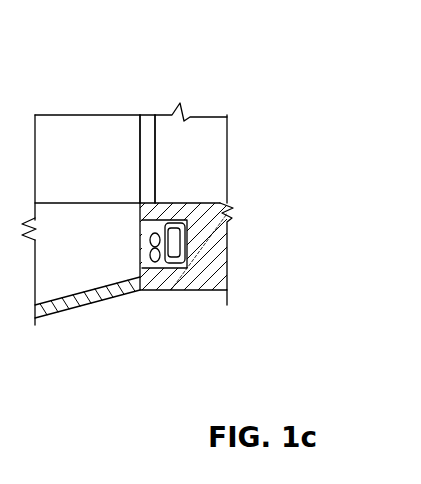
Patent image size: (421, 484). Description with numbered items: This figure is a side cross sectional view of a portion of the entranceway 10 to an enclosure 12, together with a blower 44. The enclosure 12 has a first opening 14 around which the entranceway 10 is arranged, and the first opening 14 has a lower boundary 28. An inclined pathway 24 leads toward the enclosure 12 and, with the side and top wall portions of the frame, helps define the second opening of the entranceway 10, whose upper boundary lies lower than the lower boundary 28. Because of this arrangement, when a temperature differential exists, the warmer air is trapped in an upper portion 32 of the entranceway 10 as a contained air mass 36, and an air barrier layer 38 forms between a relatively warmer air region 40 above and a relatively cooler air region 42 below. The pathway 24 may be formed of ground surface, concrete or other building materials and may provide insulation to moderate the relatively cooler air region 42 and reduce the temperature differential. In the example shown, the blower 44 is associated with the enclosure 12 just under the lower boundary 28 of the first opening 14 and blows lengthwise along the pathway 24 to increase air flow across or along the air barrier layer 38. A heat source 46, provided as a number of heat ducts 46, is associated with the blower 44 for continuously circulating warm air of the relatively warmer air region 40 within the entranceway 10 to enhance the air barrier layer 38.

The entranceway 10 is at (162, 80).
The enclosure 12 is at (272, 237).
The first opening 14 is at (167, 160).
The inclined pathway 24 is at (100, 291).
The lower boundary 28 is at (150, 198).
The upper portion 32 is at (127, 134).
The air mass 36 is at (55, 221).
The air barrier layer 38 is at (85, 197).
The relatively warmer air region 40 is at (87, 167).
The relatively cooler air region 42 is at (48, 282).
The blower 44 is at (151, 274).
The heat source 46 is at (188, 218).